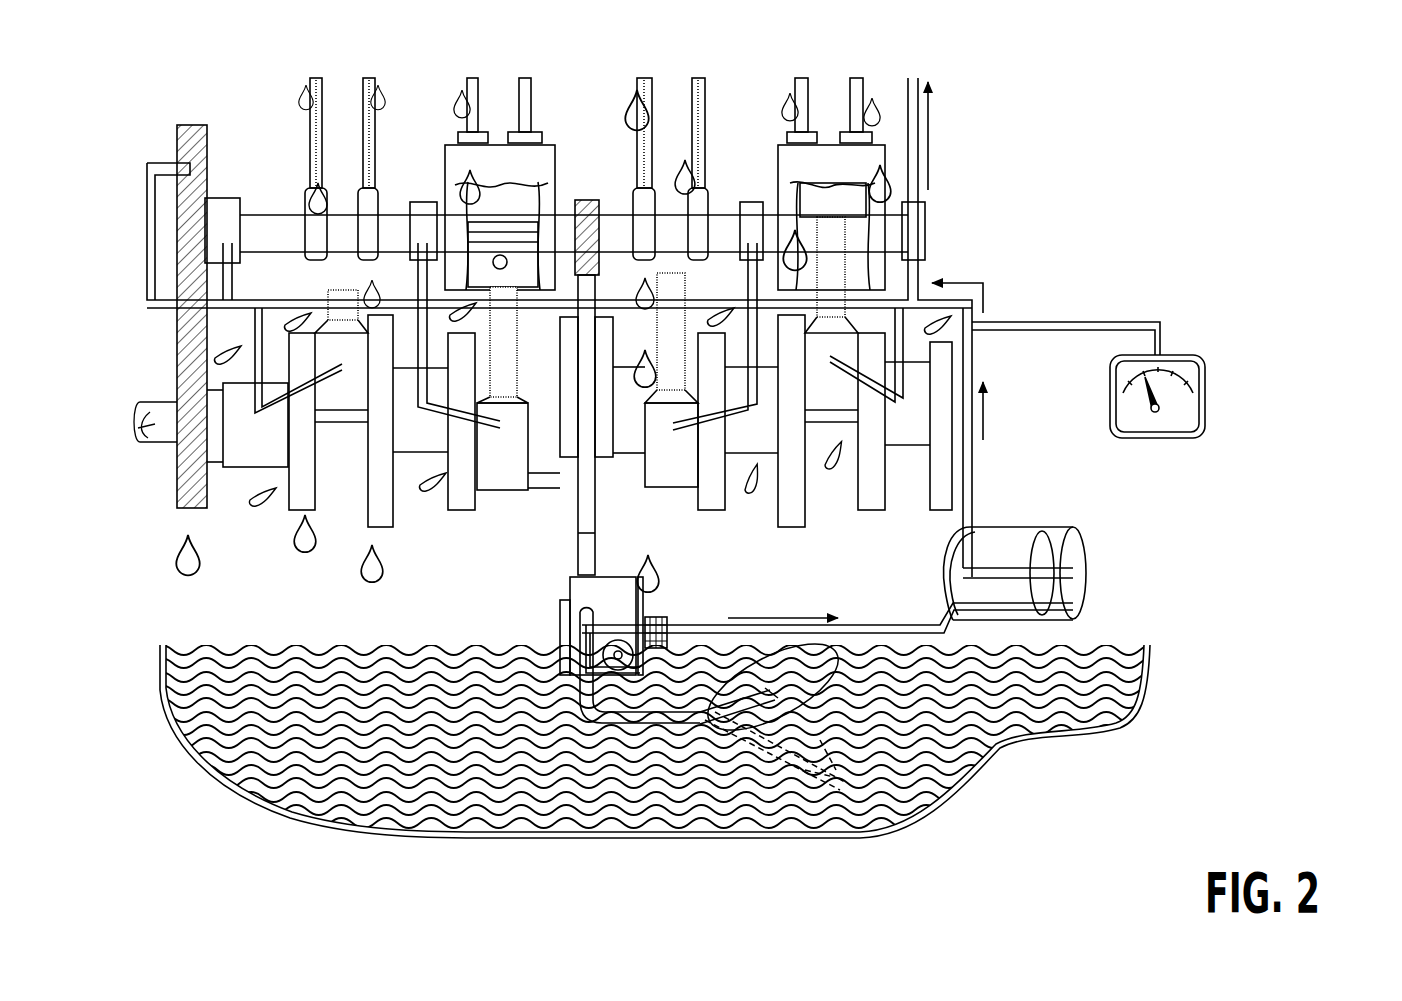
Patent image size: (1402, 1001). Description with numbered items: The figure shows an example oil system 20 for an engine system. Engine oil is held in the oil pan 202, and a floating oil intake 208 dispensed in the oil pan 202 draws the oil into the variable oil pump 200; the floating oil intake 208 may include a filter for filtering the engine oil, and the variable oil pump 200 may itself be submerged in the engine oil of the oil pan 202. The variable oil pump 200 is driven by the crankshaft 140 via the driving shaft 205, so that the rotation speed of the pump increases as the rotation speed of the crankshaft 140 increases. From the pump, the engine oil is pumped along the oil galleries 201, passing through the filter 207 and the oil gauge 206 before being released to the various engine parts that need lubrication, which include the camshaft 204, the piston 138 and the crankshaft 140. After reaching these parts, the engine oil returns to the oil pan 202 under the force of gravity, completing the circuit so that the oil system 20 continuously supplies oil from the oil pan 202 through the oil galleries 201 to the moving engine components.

The oil system 20 is at (1328, 96).
The piston 138 is at (522, 252).
The crankshaft 140 is at (138, 428).
The variable oil pump 200 is at (568, 632).
The oil galleries 201 is at (147, 242).
The oil pan 202 is at (200, 735).
The camshaft 204 is at (925, 222).
The driving shaft 205 is at (577, 505).
The oil gauge 206 is at (1205, 393).
The filter 207 is at (1010, 530).
The floating oil intake 208 is at (880, 775).